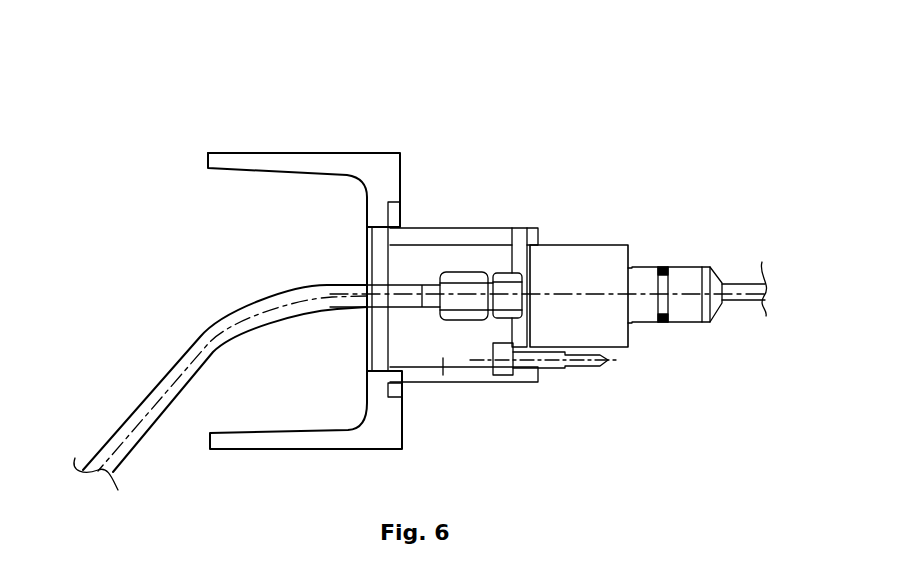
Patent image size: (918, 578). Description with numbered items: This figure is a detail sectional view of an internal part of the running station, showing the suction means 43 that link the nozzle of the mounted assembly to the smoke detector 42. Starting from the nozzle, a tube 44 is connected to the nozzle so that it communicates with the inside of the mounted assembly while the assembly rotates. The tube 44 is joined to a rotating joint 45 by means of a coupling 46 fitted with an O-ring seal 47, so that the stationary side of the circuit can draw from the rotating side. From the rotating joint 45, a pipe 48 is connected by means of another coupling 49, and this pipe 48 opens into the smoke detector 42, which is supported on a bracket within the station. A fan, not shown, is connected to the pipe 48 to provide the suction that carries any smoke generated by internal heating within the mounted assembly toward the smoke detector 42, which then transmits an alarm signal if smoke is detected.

The smoke detector 42 is at (224, 160).
The suction means 43 is at (528, 173).
The tube 44 is at (740, 284).
The rotating joint 45 is at (592, 243).
The coupling 46 is at (686, 325).
The O-ring seal 47 is at (664, 266).
The pipe 48 is at (198, 340).
The coupling 49 is at (472, 323).